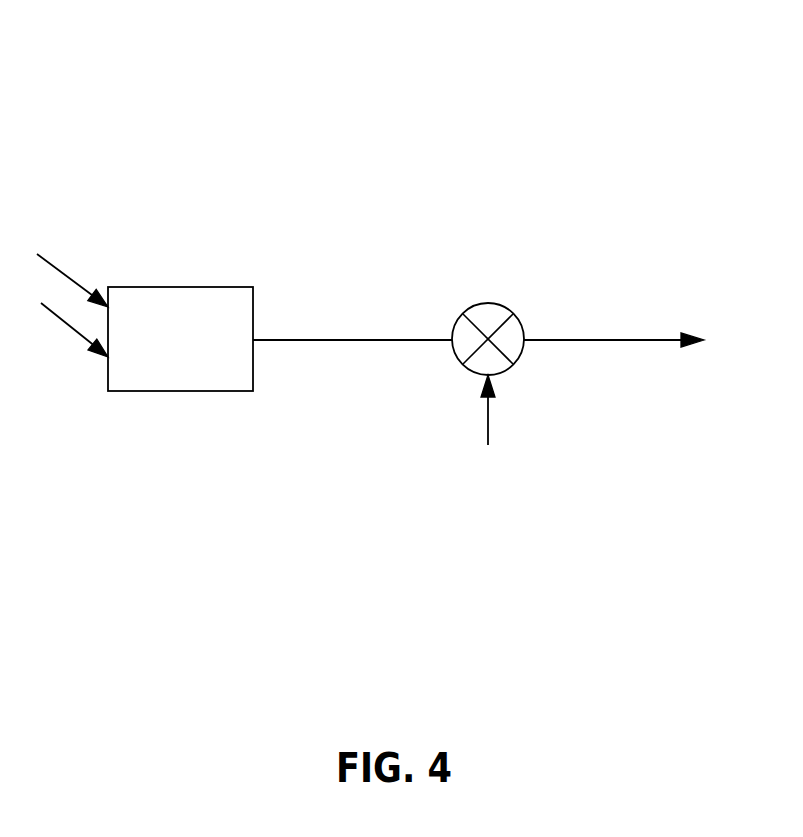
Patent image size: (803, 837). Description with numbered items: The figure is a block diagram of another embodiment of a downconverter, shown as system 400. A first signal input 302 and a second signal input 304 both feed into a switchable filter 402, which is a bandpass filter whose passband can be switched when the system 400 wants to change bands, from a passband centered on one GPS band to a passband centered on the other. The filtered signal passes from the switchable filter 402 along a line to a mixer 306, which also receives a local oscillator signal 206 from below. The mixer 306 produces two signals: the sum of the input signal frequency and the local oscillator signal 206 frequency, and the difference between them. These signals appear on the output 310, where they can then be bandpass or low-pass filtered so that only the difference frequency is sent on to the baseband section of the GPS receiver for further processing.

The system 400 is at (408, 128).
The switchable filter 402 is at (181, 286).
The first signal input 302 is at (70, 275).
The second signal input 304 is at (69, 333).
The mixer 306 is at (473, 303).
The output 310 is at (600, 339).
The local oscillator signal 206 is at (488, 412).